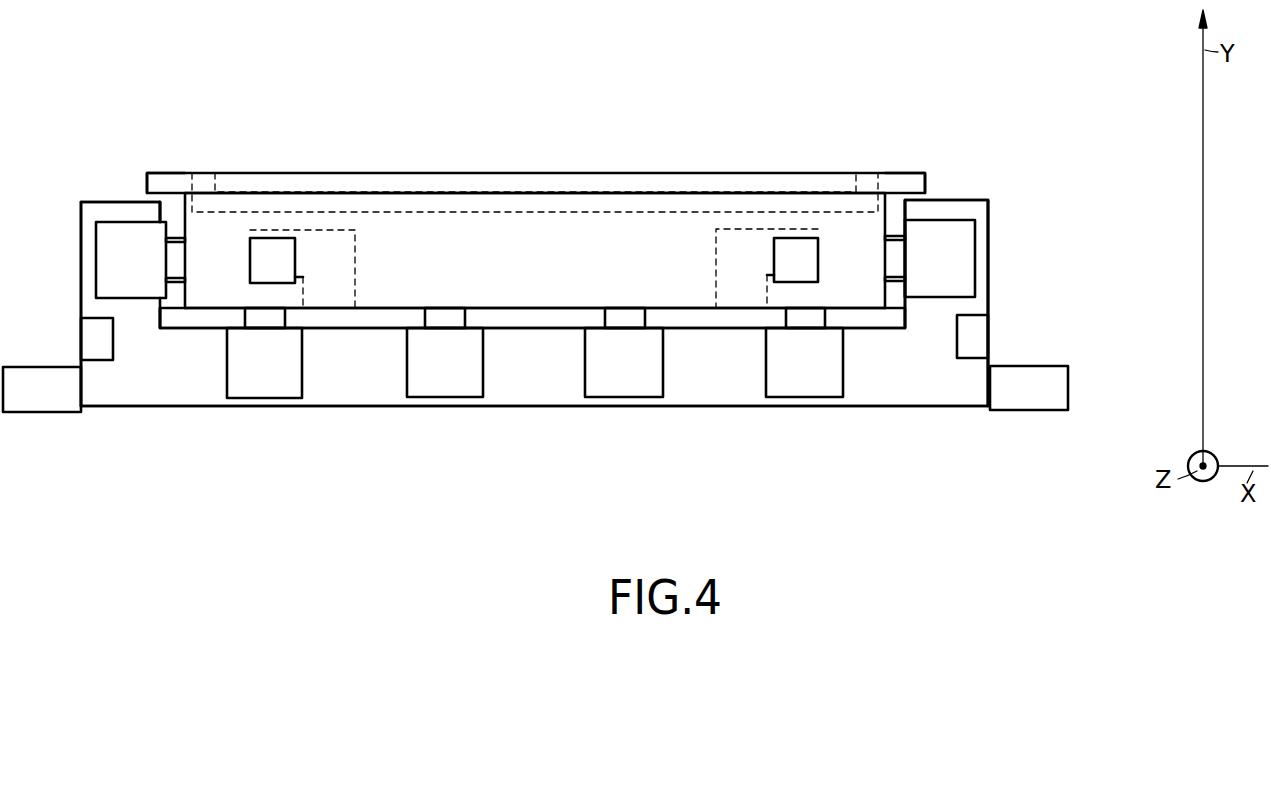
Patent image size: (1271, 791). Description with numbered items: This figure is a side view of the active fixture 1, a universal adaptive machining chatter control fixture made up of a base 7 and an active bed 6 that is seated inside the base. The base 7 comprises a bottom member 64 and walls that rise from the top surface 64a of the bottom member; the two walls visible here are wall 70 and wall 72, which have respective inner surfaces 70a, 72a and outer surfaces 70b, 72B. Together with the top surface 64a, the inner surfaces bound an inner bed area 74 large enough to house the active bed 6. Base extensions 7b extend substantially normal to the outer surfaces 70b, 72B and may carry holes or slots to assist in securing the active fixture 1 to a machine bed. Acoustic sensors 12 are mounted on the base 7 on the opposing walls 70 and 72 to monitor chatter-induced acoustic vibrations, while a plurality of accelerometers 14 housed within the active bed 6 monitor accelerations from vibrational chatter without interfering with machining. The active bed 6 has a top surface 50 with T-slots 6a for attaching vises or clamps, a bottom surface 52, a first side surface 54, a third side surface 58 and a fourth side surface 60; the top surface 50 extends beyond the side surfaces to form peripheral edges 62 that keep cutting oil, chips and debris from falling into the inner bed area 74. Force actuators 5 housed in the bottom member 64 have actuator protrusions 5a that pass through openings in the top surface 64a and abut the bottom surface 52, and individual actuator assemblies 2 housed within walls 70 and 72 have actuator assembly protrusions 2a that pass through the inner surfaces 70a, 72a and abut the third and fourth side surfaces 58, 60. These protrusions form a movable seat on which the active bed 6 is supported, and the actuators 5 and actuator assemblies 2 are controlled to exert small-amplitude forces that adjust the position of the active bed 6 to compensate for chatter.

The active fixture 1 is at (836, 88).
The actuator assembly 2 is at (132, 244).
The actuator assembly protrusion 2a is at (897, 252).
The force actuator 5 is at (285, 345).
The actuator protrusion 5a is at (255, 320).
The active bed 6 is at (387, 228).
The T-slots 6a is at (583, 202).
The base 7 is at (88, 227).
The base extension 7b is at (18, 397).
The acoustic sensor 12 is at (95, 340).
The accelerometer 14 is at (285, 240).
The top surface 50 is at (523, 172).
The bottom surface 52 is at (695, 308).
The first side surface 54 is at (433, 245).
The third side surface 58 is at (184, 293).
The fourth side surface 60 is at (885, 293).
The peripheral edge 62 is at (166, 180).
The bottom member 64 is at (117, 390).
The top surface of bottom member 64a is at (178, 328).
The wall 70 is at (90, 308).
The inner surface of wall 70 70a is at (162, 210).
The outer surface of wall 70 70b is at (81, 235).
The wall 72 is at (958, 207).
The inner surface of wall 72 72a is at (902, 210).
The outer surface of wall 72 72B is at (992, 215).
The inner bed area 74 is at (730, 315).